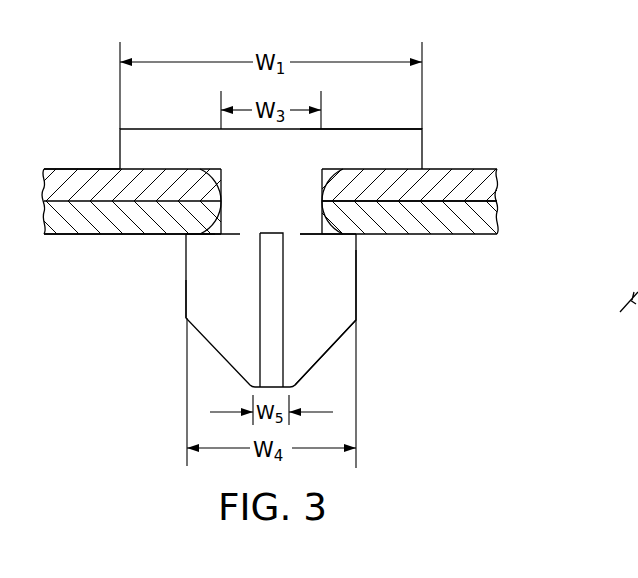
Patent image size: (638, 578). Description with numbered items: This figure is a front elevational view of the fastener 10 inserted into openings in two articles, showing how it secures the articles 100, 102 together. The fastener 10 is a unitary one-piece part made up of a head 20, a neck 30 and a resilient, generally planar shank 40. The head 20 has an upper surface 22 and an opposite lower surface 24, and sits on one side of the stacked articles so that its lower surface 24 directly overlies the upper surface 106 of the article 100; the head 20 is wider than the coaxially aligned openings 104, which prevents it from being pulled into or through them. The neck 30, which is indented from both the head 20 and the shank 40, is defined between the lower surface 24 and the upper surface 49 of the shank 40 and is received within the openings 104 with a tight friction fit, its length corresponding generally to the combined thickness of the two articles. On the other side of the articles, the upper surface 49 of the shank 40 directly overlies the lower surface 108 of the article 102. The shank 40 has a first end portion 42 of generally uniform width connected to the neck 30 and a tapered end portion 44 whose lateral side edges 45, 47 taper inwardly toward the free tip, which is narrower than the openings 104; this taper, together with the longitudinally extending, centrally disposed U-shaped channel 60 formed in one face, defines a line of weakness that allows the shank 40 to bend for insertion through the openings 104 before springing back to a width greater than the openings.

The fastener 10 is at (103, 81).
The head 20 is at (302, 120).
The upper surface 22 is at (333, 128).
The lower surface 24 is at (221, 185).
The neck 30 is at (312, 210).
The shank 40 is at (215, 297).
The first end portion 42 is at (348, 283).
The tapered end portion 44 is at (306, 371).
The lateral side edge 45 is at (357, 300).
The lateral side edge 47 is at (186, 300).
The upper surface 49 is at (204, 236).
The U-shaped channel 60 is at (259, 348).
The article 100 is at (483, 190).
The article 102 is at (482, 215).
The openings 104 is at (322, 187).
The upper surface 106 is at (71, 168).
The lower surface 108 is at (75, 235).